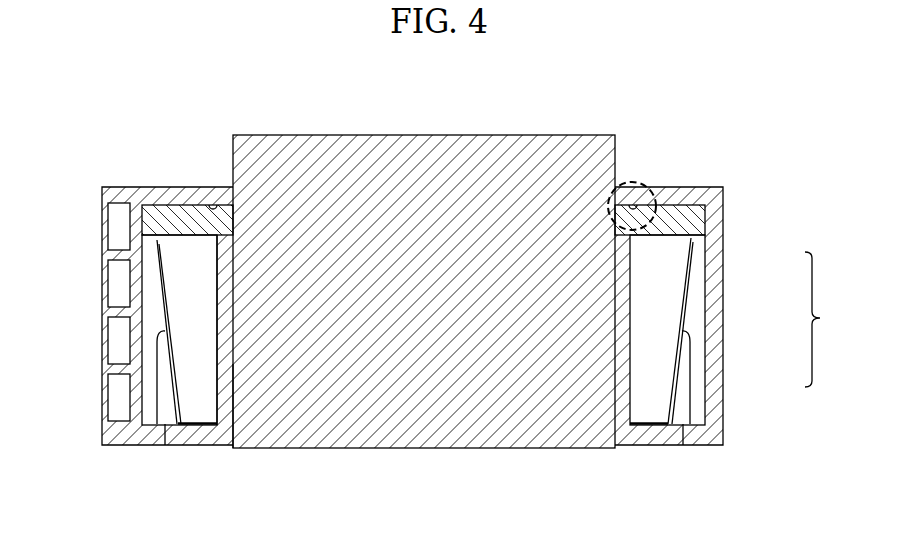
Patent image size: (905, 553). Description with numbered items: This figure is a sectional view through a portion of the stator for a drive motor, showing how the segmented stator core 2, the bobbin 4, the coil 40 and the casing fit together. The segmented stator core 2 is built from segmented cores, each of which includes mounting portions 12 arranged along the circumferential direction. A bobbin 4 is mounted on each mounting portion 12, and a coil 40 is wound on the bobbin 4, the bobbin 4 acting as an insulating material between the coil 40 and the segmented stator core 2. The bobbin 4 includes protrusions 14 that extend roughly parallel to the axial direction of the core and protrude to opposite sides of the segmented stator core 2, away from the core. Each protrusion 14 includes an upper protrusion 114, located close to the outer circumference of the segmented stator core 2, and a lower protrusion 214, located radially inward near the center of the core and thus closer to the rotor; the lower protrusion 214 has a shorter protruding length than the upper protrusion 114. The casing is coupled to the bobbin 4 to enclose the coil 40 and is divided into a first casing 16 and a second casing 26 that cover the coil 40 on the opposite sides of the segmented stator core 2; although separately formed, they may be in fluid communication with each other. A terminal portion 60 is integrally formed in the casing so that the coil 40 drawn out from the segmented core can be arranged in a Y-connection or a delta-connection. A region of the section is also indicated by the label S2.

The segmented stator core 2 is at (475, 157).
The bobbin 4 is at (223, 380).
The mounting portion 12 is at (232, 364).
The protrusion 14 is at (825, 319).
The first casing 16 is at (113, 192).
The second casing 26 is at (682, 197).
The coil 40 is at (188, 255).
The terminal portion 60 is at (115, 402).
The upper protrusion 114 is at (168, 215).
The lower protrusion 214 is at (672, 436).
The detail region S2 is at (632, 194).